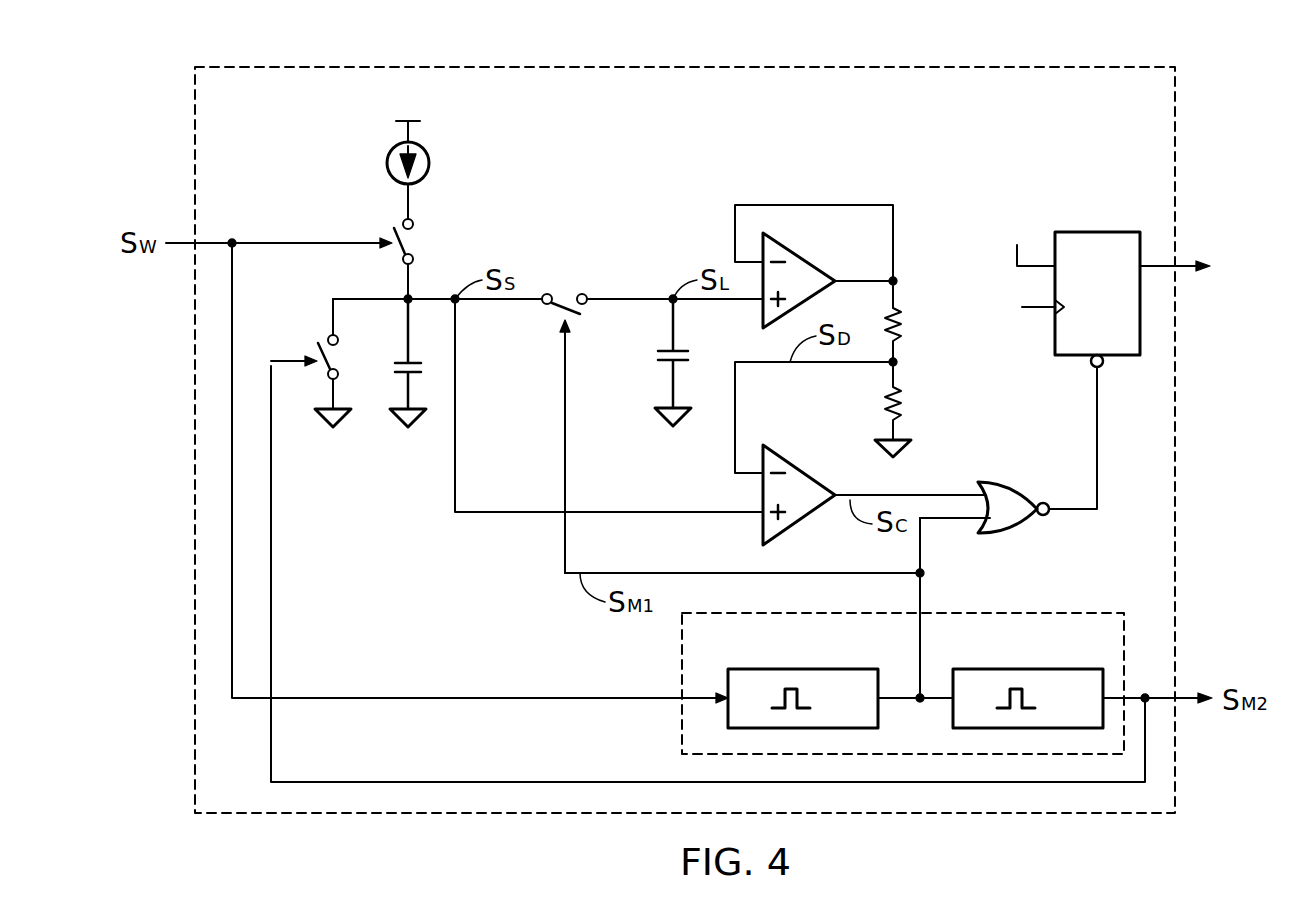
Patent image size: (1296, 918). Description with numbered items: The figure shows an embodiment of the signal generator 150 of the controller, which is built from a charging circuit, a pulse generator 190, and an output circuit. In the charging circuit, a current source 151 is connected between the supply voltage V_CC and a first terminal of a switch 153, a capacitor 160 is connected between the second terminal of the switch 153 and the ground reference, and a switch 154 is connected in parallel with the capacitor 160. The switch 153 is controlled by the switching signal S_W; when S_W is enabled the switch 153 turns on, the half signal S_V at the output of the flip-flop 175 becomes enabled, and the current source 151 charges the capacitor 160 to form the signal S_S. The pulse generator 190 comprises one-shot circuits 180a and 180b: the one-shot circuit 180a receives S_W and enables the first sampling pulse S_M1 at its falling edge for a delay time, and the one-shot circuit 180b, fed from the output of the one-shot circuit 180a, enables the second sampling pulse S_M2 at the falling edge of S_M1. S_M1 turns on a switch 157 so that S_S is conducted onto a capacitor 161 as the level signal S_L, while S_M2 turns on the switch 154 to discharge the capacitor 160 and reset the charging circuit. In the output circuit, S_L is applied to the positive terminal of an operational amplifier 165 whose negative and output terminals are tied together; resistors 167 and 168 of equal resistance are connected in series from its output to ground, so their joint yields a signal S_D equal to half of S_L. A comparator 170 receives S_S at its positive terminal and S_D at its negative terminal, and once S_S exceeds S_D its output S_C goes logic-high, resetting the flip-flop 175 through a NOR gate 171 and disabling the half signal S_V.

The signal generator 150 is at (1105, 67).
The current source 151 is at (392, 160).
The switch 153 is at (418, 247).
The switch 154 is at (316, 339).
The switch 157 is at (562, 292).
The capacitor 160 is at (393, 365).
The capacitor 161 is at (655, 357).
The operational amplifier 165 is at (798, 250).
The resistor 167 is at (908, 326).
The resistor 168 is at (908, 403).
The comparator 170 is at (798, 462).
The NOR gate 171 is at (1012, 482).
The flip-flop 175 is at (1095, 232).
The one-shot circuit 180a is at (805, 669).
The one-shot circuit 180b is at (1020, 669).
The pulse generator 190 is at (1057, 613).